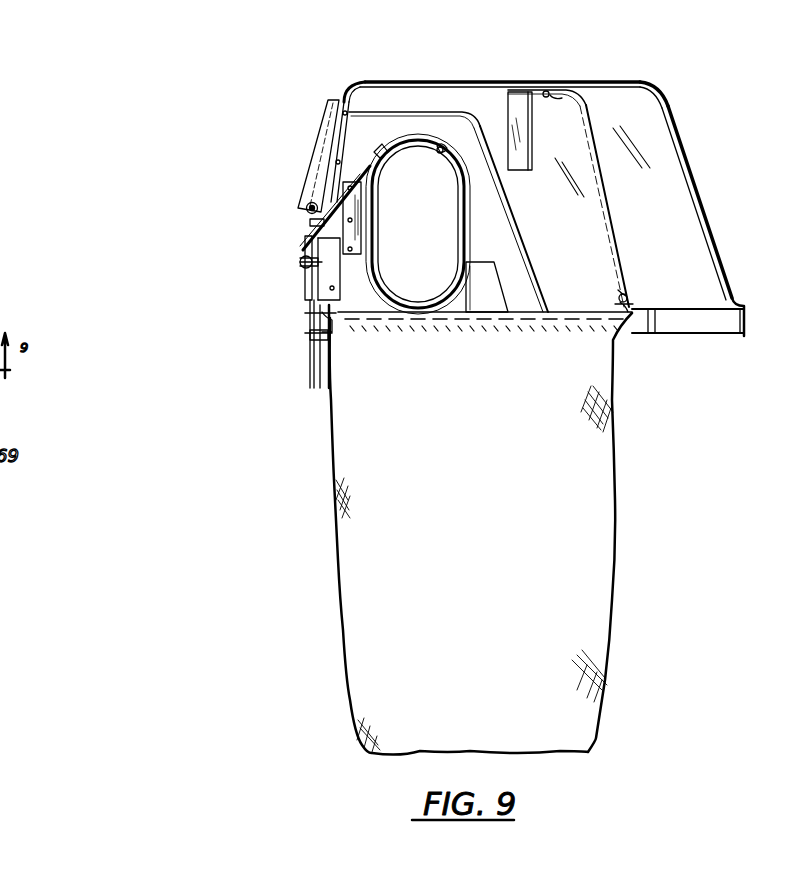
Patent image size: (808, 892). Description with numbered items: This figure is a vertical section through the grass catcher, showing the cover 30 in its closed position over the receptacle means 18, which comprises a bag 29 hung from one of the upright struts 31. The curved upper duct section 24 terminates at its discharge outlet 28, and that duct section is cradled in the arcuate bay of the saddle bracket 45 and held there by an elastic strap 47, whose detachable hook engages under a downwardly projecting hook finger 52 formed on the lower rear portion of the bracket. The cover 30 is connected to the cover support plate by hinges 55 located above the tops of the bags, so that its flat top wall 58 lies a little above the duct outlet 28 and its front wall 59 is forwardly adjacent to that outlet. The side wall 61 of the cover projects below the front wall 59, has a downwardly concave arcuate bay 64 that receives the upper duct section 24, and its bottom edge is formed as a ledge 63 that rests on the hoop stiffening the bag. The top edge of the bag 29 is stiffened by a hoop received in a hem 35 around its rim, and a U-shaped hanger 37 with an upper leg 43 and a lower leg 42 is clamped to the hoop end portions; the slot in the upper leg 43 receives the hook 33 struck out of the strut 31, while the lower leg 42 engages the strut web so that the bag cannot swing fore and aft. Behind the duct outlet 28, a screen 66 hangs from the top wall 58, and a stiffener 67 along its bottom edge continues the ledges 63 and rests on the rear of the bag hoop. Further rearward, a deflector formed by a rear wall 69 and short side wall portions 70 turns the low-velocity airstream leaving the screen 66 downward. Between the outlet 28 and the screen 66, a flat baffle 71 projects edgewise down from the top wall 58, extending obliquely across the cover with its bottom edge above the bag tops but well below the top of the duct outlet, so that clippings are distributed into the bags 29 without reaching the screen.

The receptacle means 18 is at (628, 514).
The upper elbow section 24 is at (463, 243).
The discharge outlet 28 is at (440, 221).
The bag 29 is at (614, 462).
The cover 30 is at (400, 46).
The upright strut 31 is at (318, 374).
The hook 33 is at (312, 290).
The hem 35 is at (517, 325).
The U-shaped hanger 37 is at (336, 330).
The lower leg 42 is at (315, 350).
The upper leg 43 is at (318, 302).
The saddle bracket 45 is at (498, 262).
The elastic strap 47 is at (360, 178).
The hook finger 52 is at (474, 306).
The hinge 55 is at (304, 214).
The top wall 58 is at (485, 82).
The front wall 59 is at (328, 125).
The side wall 61 is at (438, 92).
The ledge 63 is at (745, 320).
The arcuate bay 64 is at (455, 143).
The screen 66 is at (608, 210).
The stiffener 67 is at (547, 88).
The rear wall 69 is at (692, 163).
The side wall portion 70 is at (633, 146).
The baffle 71 is at (522, 150).